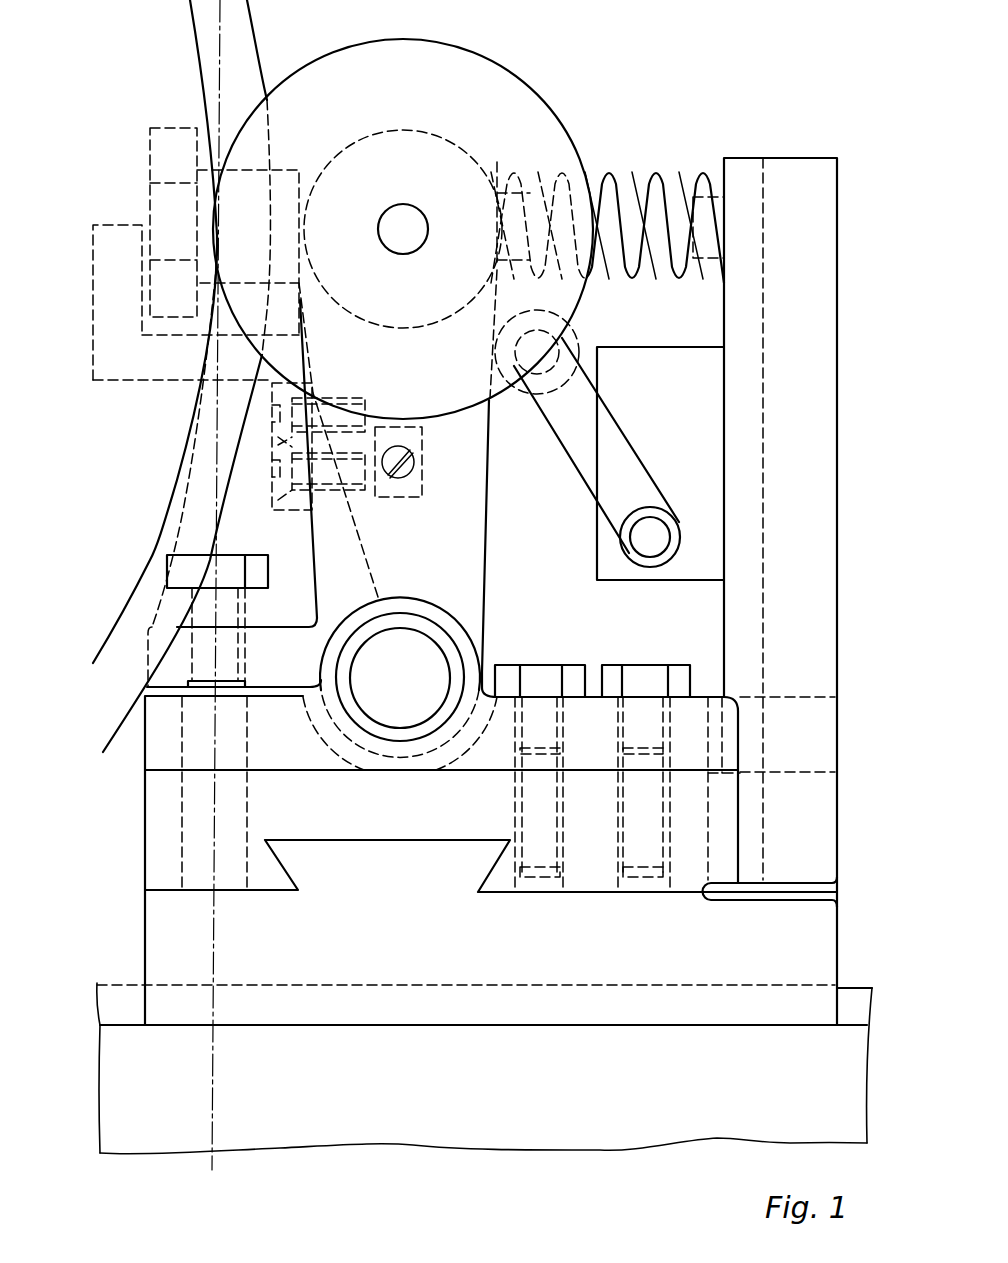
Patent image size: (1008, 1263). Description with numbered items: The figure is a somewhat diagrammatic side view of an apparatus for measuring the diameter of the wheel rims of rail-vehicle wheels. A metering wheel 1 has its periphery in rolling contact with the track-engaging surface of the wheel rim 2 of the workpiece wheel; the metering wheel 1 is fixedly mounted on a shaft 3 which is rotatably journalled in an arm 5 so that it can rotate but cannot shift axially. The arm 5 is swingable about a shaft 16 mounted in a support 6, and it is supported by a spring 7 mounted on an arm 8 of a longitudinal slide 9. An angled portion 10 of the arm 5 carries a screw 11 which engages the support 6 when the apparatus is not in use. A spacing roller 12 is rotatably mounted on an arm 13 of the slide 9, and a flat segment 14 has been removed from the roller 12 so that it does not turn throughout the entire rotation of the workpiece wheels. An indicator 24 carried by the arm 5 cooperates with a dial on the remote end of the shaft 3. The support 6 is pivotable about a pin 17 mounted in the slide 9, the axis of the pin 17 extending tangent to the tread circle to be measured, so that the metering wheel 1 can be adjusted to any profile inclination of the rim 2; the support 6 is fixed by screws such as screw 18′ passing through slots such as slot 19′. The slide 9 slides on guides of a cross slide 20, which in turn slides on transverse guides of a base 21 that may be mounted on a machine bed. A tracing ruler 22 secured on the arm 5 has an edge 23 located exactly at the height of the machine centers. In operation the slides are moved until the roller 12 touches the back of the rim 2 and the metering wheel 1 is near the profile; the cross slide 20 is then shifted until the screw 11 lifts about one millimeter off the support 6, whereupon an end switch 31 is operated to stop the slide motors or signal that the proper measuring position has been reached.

The metering wheel 1 is at (533, 152).
The wheel rim 2 is at (200, 50).
The shaft 3 is at (412, 228).
The arm 5 is at (457, 480).
The support 6 is at (665, 760).
The spring 7 is at (683, 228).
The arm of the longitudinal slide 8 is at (812, 455).
The longitudinal slide 9 is at (590, 823).
The angled portion 10 is at (267, 667).
The screw 11 is at (208, 607).
The spacing roller 12 is at (170, 138).
The arm 13 is at (198, 477).
The flat segment 14 is at (167, 210).
The shaft 16 is at (402, 690).
The pin 17 is at (202, 743).
The screw 18′ is at (645, 683).
The slot 19′ is at (603, 763).
The cross slide 20 is at (735, 940).
The base 21 is at (757, 1070).
The tracing ruler 22 is at (153, 368).
The edge 23 is at (110, 225).
The indicator 24 is at (420, 448).
The end switch 31 is at (703, 437).